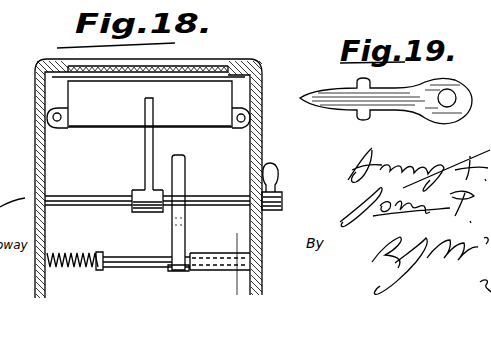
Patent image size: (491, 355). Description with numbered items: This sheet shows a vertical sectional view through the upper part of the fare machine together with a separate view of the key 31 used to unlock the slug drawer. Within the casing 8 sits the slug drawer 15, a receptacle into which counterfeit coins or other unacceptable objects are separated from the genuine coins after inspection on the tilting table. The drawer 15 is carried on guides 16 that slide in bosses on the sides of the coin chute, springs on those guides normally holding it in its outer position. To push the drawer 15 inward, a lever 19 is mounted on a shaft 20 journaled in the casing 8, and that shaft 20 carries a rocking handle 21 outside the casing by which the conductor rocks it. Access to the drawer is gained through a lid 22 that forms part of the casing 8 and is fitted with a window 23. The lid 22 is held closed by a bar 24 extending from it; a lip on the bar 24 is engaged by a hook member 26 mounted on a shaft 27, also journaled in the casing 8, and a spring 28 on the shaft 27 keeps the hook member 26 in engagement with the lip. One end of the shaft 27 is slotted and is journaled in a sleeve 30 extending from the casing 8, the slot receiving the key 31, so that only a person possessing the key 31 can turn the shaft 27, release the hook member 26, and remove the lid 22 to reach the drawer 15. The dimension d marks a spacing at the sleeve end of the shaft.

In FIG. 18, the casing 8 is at (259, 231).
In FIG. 18, the slug drawer 15 is at (150, 104).
In FIG. 18, the guides 16 is at (47, 117).
In FIG. 18, the lever 19 is at (145, 153).
In FIG. 18, the shaft 20 is at (222, 194).
In FIG. 18, the rocking handle 21 is at (282, 176).
In FIG. 18, the lid 22 is at (247, 65).
In FIG. 18, the window 23 is at (212, 63).
In FIG. 18, the bar 24 is at (183, 176).
In FIG. 18, the hook member 26 is at (157, 267).
In FIG. 18, the shaft 27 is at (124, 261).
In FIG. 18, the spring 28 is at (73, 254).
In FIG. 18, the sleeve 30 is at (212, 270).
In FIG. 18, the distance d is at (210, 240).
In FIG. 19, the key 31 is at (400, 100).